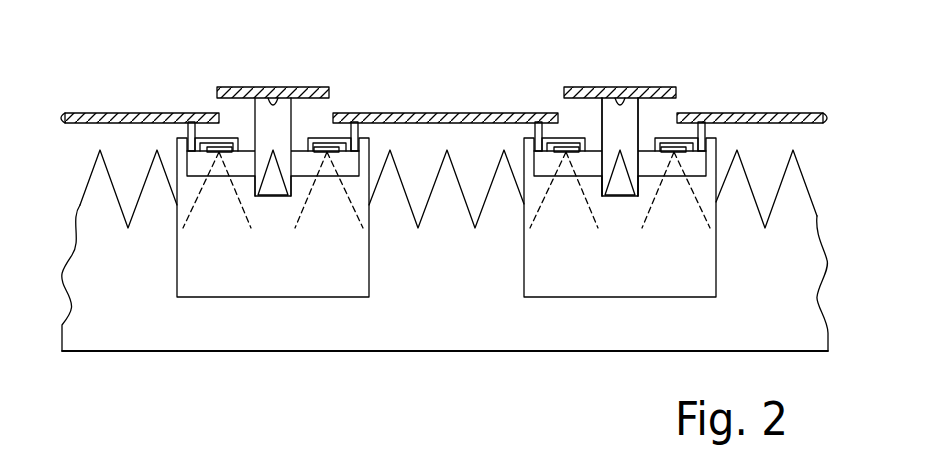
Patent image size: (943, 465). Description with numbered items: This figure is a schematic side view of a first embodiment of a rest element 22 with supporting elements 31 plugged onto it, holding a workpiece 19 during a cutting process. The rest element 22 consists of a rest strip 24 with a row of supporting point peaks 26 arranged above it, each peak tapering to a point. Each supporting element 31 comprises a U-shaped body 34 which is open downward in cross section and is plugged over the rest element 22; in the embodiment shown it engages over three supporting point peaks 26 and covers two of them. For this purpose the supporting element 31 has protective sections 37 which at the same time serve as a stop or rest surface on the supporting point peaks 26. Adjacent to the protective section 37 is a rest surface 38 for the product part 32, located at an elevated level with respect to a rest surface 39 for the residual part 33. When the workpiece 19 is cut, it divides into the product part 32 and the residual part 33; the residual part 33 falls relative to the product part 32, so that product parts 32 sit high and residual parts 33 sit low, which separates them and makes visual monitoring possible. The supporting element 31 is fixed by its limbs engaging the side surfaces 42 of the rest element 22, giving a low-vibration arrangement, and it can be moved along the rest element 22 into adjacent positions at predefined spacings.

The workpiece 19 is at (103, 95).
The rest element 22 is at (62, 262).
The rest strip 24 is at (117, 318).
The supporting point peaks 26 is at (97, 198).
The supporting element 31 is at (518, 270).
The product part 32 is at (583, 88).
The residual part 33 is at (440, 110).
The U-shaped body 34 is at (291, 278).
The protective sections 37 is at (236, 136).
The rest surface for the product part 38 is at (267, 96).
The rest surface of the residual part 39 is at (190, 128).
The side surfaces 42 is at (200, 335).